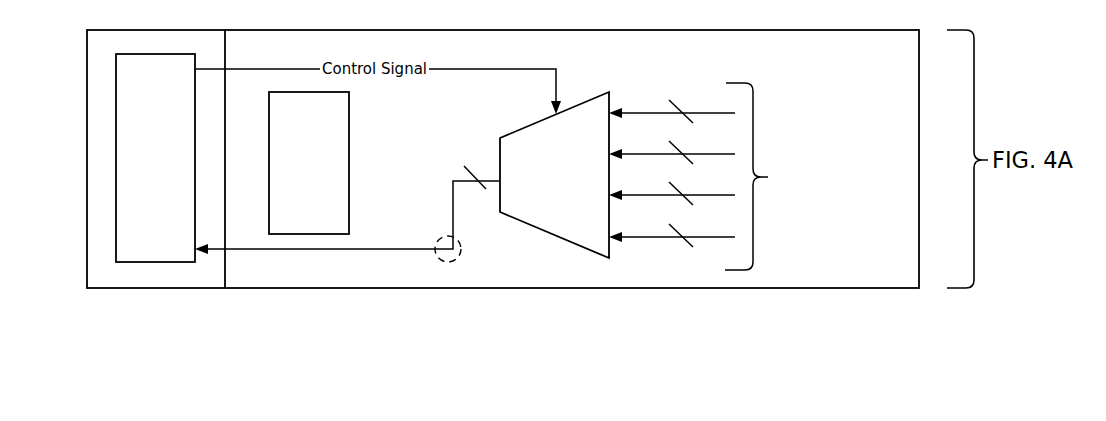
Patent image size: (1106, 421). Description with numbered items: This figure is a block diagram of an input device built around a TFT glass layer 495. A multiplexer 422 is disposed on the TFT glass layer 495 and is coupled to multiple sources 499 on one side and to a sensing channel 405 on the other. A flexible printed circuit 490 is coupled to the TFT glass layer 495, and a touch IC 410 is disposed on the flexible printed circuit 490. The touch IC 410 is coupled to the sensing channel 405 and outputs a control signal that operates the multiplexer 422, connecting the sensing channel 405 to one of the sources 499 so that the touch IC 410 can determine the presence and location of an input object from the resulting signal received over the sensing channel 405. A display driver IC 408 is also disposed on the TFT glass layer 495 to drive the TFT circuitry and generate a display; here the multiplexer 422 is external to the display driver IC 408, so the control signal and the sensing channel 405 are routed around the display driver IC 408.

The sensing channel 405 is at (447, 263).
The display driver IC 408 is at (320, 186).
The touch IC 410 is at (167, 189).
The multiplexer 422 is at (556, 182).
The flexible printed circuit 490 is at (156, 225).
The TFT glass layer 495 is at (823, 250).
The sources 499 is at (731, 176).